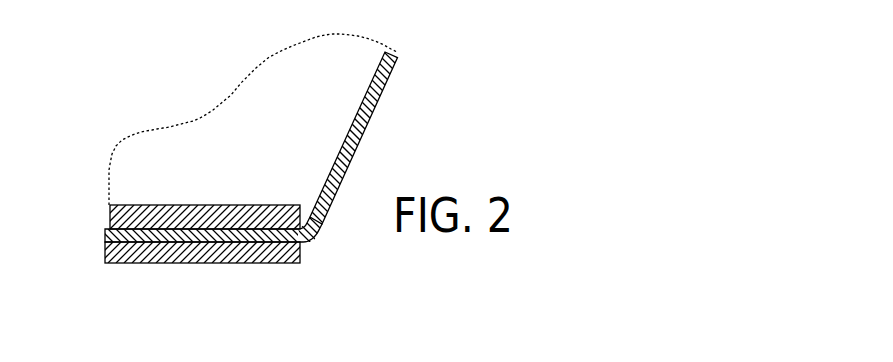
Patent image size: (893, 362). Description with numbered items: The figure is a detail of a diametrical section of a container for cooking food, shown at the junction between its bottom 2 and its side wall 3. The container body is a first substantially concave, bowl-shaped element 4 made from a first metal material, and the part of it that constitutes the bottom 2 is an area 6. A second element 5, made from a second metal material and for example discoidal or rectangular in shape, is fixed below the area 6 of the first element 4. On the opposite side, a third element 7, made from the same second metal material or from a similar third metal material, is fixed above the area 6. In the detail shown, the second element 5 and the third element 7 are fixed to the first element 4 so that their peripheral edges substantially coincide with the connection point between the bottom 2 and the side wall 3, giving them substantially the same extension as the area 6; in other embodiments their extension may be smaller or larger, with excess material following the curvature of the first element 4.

The bottom 2 is at (92, 266).
The side wall 3 is at (397, 97).
The first substantially concave element 4 is at (331, 210).
The second element 5 is at (197, 247).
The area 6 is at (106, 234).
The third element 7 is at (172, 213).